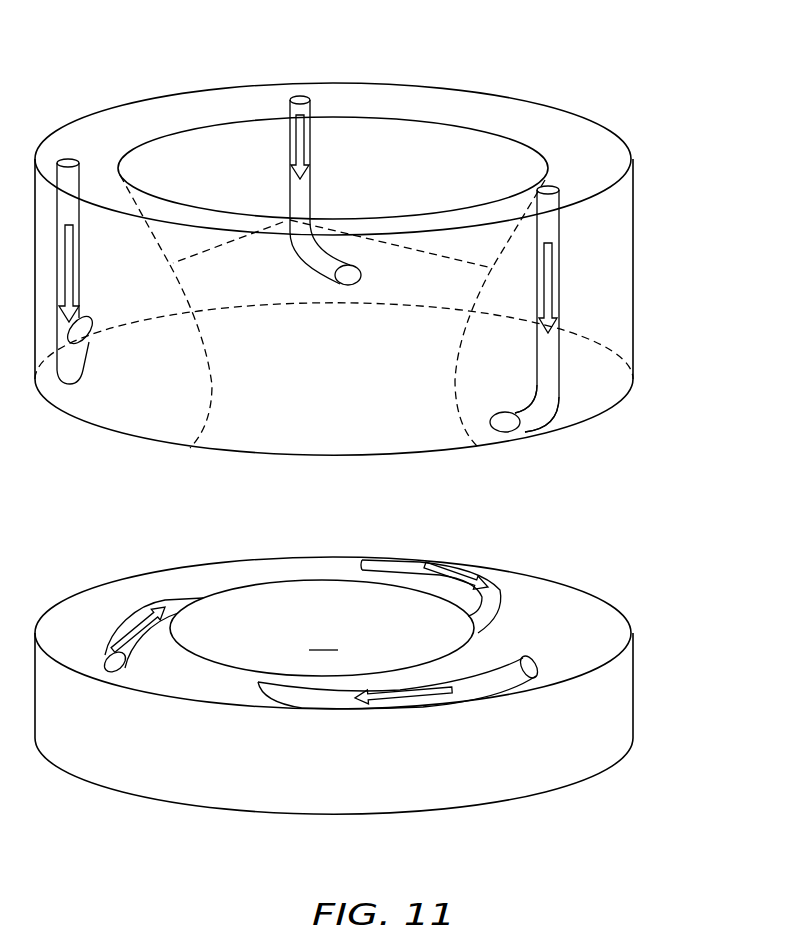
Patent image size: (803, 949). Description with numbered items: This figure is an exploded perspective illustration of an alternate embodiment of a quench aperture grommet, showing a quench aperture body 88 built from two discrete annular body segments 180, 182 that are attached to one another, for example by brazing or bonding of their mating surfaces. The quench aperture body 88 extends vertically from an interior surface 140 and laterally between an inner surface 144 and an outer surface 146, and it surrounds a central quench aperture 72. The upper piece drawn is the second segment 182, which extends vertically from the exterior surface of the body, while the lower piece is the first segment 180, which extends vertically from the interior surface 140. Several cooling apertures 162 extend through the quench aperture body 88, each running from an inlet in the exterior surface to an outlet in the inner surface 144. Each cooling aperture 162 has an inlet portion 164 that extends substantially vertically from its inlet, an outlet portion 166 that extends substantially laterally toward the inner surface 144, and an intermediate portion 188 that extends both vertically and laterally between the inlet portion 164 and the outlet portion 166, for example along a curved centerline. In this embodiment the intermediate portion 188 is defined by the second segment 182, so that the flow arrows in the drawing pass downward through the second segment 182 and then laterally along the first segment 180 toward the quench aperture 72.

The quench aperture body 88 is at (378, 321).
The second segment 182 is at (378, 358).
The outer surface 146 is at (634, 298).
The quench aperture 72 is at (383, 171).
The inlet portion 164 is at (523, 409).
The intermediate portion 188 is at (533, 405).
The cooling aperture 162 is at (553, 402).
The outlet portion 166 is at (460, 568).
The first segment 180 is at (379, 685).
The interior surface 140 is at (636, 689).
The inner surface 144 is at (203, 667).